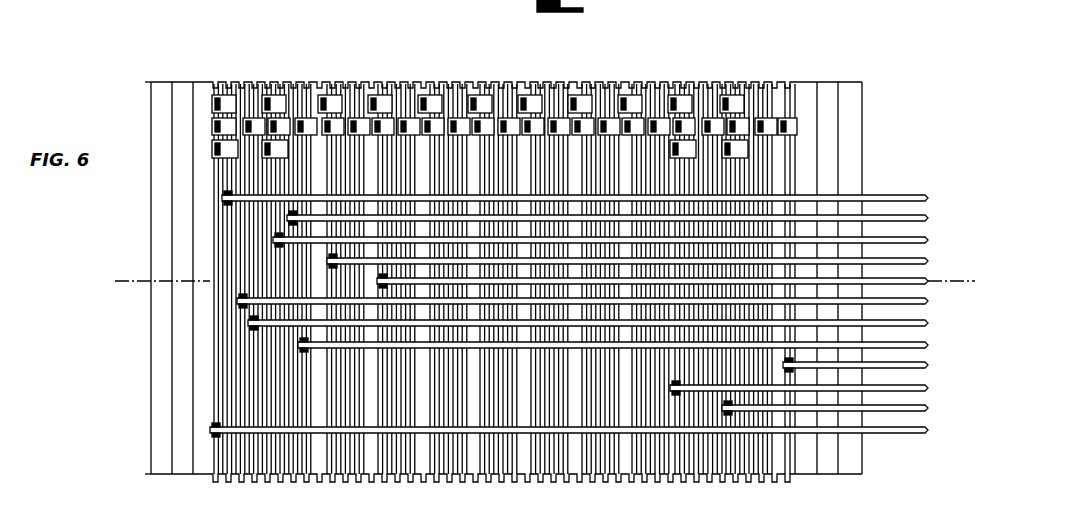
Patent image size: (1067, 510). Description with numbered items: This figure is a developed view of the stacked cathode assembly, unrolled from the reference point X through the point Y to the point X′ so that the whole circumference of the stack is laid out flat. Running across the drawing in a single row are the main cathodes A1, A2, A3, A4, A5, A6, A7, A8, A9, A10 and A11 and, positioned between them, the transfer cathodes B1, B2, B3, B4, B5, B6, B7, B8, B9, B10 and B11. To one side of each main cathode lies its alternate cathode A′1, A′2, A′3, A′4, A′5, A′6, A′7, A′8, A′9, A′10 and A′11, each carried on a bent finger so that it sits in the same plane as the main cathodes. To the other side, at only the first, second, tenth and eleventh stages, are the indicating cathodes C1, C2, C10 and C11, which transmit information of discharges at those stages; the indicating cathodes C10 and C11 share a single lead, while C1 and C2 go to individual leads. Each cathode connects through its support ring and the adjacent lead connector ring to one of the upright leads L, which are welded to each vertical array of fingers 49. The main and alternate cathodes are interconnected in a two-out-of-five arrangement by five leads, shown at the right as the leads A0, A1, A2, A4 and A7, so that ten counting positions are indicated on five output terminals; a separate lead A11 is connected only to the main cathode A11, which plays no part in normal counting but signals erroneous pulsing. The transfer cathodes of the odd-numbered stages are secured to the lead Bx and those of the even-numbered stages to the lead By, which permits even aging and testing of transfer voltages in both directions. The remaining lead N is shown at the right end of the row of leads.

The indicating cathode C11 is at (212, 148).
The indicating cathode C10 is at (266, 148).
The indicating cathode C2 is at (676, 148).
The indicating cathode C1 is at (727, 148).
The main cathode A11 is at (212, 127).
The main cathode A10 is at (270, 127).
The main cathode A9 is at (325, 127).
The main cathode A8 is at (375, 127).
The main cathode A7 is at (425, 127).
The main cathode A6 is at (475, 127).
The main cathode A5 is at (525, 127).
The main cathode A4 is at (575, 127).
The main cathode A3 is at (625, 127).
The main cathode A2 is at (677, 127).
The main cathode A1 is at (729, 127).
The upright lead A0 is at (594, 303).
The alternate cathode A′11 is at (214, 106).
The alternate cathode A′10 is at (279, 106).
The alternate cathode A′9 is at (337, 105).
The alternate cathode A′8 is at (387, 105).
The alternate cathode A′7 is at (437, 105).
The alternate cathode A′6 is at (487, 105).
The alternate cathode A′5 is at (537, 105).
The alternate cathode A′4 is at (587, 105).
The alternate cathode A′3 is at (637, 105).
The alternate cathode A′2 is at (688, 105).
The alternate cathode A′1 is at (741, 105).
The transfer cathode B11 is at (251, 127).
The transfer cathode B10 is at (304, 127).
The transfer cathode B9 is at (356, 127).
The transfer cathode B8 is at (406, 127).
The transfer cathode B7 is at (456, 127).
The transfer cathode B6 is at (506, 127).
The transfer cathode B5 is at (556, 127).
The transfer cathode B4 is at (606, 127).
The transfer cathode B3 is at (656, 127).
The transfer cathode B2 is at (709, 127).
The transfer cathode B1 is at (762, 127).
The transfer cathode lead Bx is at (600, 325).
The transfer cathode lead By is at (625, 347).
The neutral lead N is at (795, 127).
The upright leads L is at (960, 160).
The fingers 49 is at (537, 6).
The developed view reference point X is at (141, 82).
The developed view reference point X′ is at (135, 484).
The developed view reference point Y is at (539, 281).